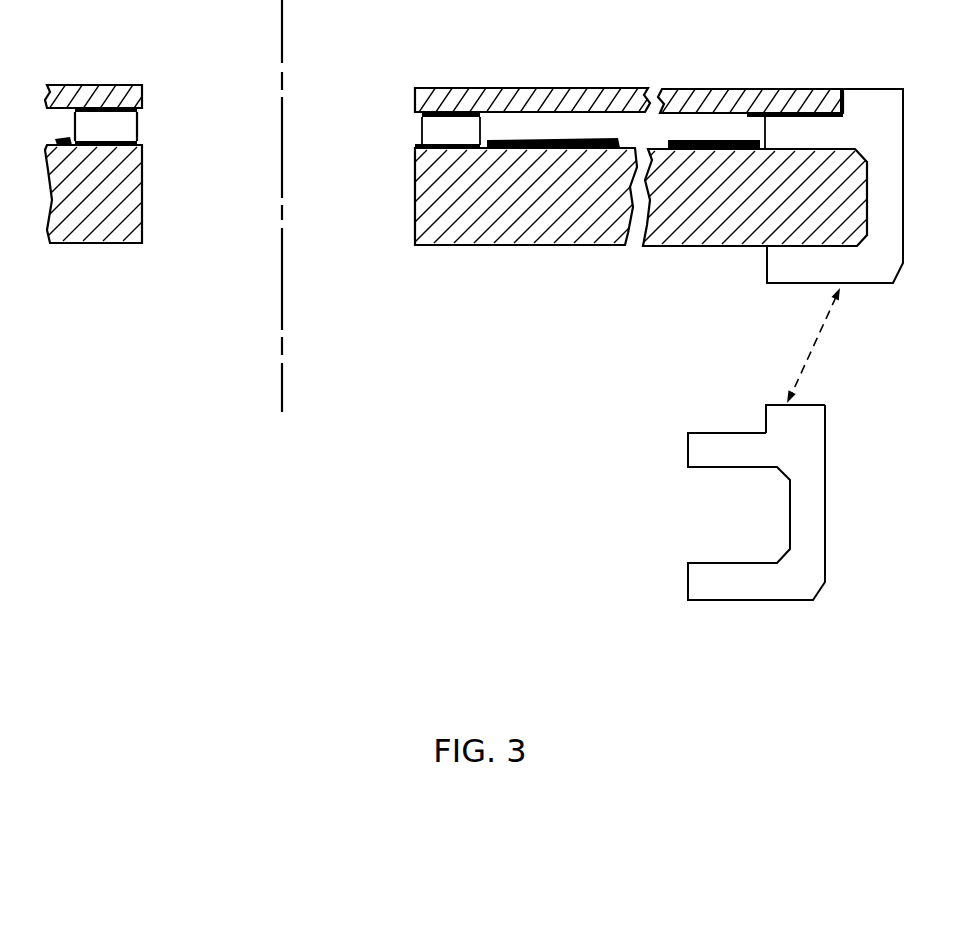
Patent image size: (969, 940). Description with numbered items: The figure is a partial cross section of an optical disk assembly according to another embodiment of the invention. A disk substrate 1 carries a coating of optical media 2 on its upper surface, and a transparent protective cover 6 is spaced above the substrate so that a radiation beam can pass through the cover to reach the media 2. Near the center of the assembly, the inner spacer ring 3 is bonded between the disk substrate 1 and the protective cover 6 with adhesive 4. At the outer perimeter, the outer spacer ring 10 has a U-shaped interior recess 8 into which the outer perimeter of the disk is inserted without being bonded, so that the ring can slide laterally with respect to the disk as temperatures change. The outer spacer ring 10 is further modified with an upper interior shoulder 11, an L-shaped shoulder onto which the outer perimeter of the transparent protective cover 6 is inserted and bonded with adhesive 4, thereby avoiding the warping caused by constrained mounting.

The disk substrate 1 is at (460, 230).
The optical media 2 is at (525, 138).
The inner spacer ring 3 is at (470, 127).
The adhesive 4 is at (442, 143).
The transparent protective cover 6 is at (602, 100).
The U-shaped interior recess 8 is at (735, 518).
The outer spacer ring 10 is at (813, 442).
The upper interior shoulder 11 is at (755, 422).